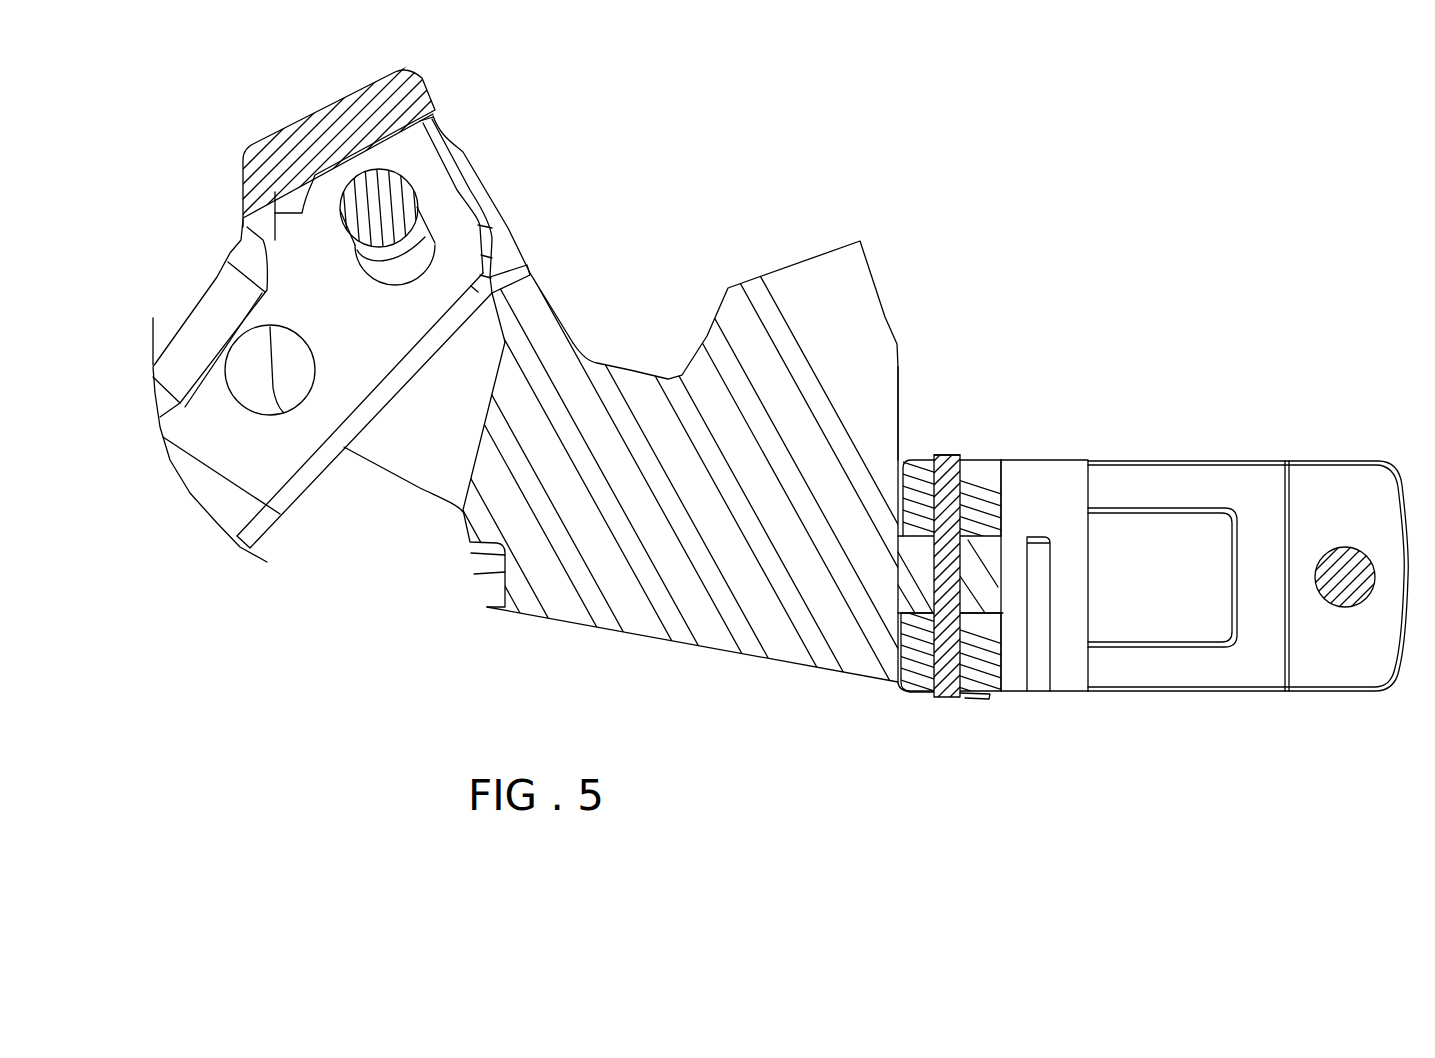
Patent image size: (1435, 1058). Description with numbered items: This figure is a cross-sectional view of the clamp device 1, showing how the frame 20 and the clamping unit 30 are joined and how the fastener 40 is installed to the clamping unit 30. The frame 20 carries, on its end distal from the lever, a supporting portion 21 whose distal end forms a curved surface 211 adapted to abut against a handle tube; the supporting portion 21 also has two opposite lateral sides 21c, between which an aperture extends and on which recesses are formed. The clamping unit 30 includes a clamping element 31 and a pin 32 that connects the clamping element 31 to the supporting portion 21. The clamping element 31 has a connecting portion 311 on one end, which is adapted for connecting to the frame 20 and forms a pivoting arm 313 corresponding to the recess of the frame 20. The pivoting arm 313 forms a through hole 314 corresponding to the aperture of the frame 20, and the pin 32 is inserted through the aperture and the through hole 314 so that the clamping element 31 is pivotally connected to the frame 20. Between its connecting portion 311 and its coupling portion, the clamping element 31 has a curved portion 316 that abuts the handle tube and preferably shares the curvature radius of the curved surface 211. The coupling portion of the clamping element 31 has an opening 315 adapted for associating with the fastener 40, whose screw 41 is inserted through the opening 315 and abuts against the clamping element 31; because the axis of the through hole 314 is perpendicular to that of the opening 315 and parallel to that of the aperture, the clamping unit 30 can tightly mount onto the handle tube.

The clamp device 1 is at (656, 170).
The frame 20 is at (725, 492).
The supporting portion 21 is at (1018, 558).
The lateral sides 21c is at (907, 457).
The curved surface 211 is at (1015, 600).
The clamping unit 30 is at (1065, 453).
The clamping element 31 is at (1225, 460).
The connecting portion 311 is at (980, 455).
The pivoting arm 313 is at (1053, 483).
The through hole 314 is at (950, 507).
The opening 315 is at (1345, 558).
The curved portion 316 is at (1158, 480).
The pin 32 is at (946, 455).
The fastener 40 is at (1322, 630).
The screw 41 is at (1343, 592).